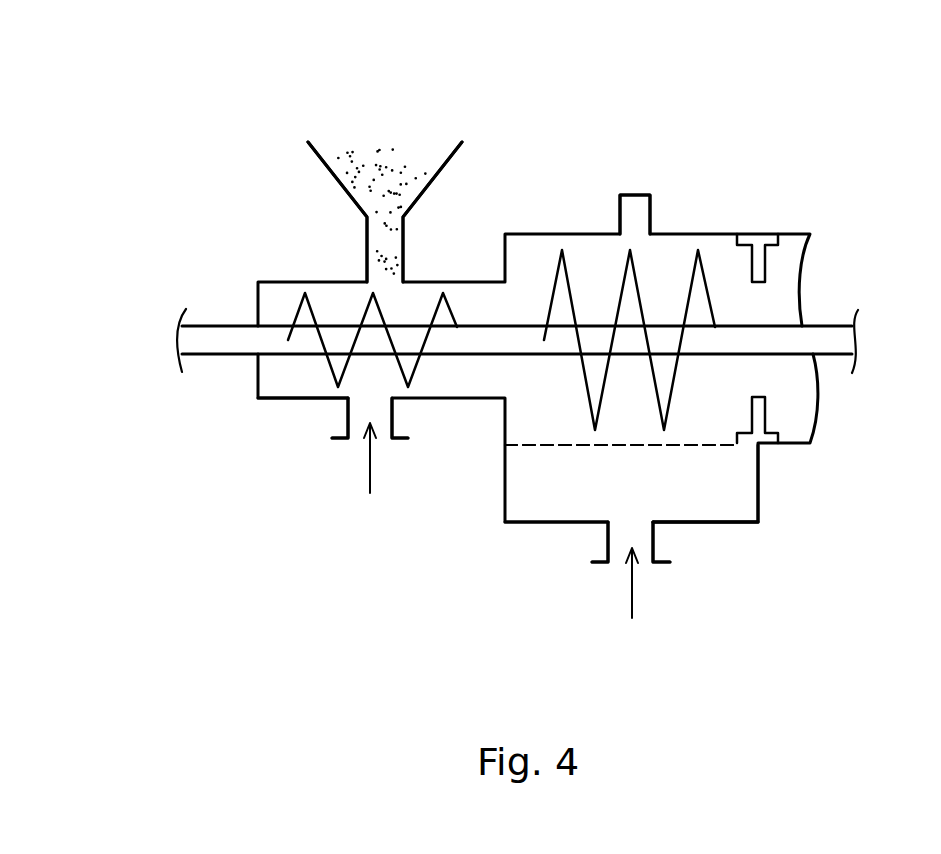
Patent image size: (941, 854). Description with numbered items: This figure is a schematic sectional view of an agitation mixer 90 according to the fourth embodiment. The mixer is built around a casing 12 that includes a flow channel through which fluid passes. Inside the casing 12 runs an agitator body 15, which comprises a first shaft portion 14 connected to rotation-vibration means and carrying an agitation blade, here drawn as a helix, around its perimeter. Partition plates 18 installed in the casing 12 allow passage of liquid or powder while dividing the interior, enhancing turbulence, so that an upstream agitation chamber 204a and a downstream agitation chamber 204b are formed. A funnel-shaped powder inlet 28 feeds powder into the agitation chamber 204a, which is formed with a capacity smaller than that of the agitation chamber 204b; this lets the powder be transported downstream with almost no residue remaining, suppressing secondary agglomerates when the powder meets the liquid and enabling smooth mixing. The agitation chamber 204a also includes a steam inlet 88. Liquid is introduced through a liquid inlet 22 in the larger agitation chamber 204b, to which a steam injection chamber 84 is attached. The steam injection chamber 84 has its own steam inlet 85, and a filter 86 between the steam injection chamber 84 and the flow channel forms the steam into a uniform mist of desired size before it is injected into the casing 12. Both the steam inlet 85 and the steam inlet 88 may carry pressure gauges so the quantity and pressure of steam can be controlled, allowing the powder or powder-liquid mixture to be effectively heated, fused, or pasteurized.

The agitation mixer 90 is at (516, 179).
The casing 12 is at (708, 233).
The first shaft portion 14 is at (215, 324).
The agitator body 15 is at (568, 263).
The partition plate 18 is at (757, 233).
The liquid inlet 22 is at (652, 204).
The powder inlet 28 is at (332, 173).
The steam injection chamber 84 is at (683, 512).
The steam inlet 85 is at (595, 542).
The filter 86 is at (570, 447).
The steam inlet 88 is at (343, 418).
The agitation chamber 204a is at (270, 382).
The agitation chamber 204b is at (703, 425).